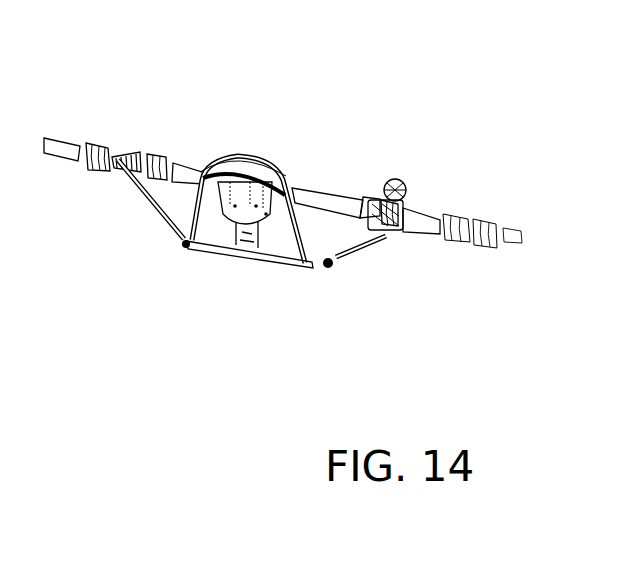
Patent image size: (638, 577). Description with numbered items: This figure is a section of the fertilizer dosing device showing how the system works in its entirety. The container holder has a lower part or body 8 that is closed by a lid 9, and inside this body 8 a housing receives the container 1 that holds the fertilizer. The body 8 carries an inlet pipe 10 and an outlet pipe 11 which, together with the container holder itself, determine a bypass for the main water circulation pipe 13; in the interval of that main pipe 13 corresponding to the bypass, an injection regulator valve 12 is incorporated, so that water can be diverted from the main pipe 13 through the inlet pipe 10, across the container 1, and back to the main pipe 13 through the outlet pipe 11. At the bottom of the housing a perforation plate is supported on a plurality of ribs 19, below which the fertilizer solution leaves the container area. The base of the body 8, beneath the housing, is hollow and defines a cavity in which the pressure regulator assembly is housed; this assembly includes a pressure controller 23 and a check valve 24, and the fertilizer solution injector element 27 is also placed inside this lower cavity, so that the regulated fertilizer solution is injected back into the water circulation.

The container 1 is at (277, 160).
The lower part or body 8 is at (318, 210).
The lid 9 is at (229, 160).
The inlet pipe 10 is at (357, 255).
The outlet pipe 11 is at (150, 210).
The injection regulator valve 12 is at (407, 180).
The main water circulation pipe 13 is at (301, 210).
The ribs 19 is at (182, 167).
The pressure controller 23 is at (227, 253).
The check valve 24 is at (247, 253).
The fertilizer solution injector element 27 is at (197, 250).